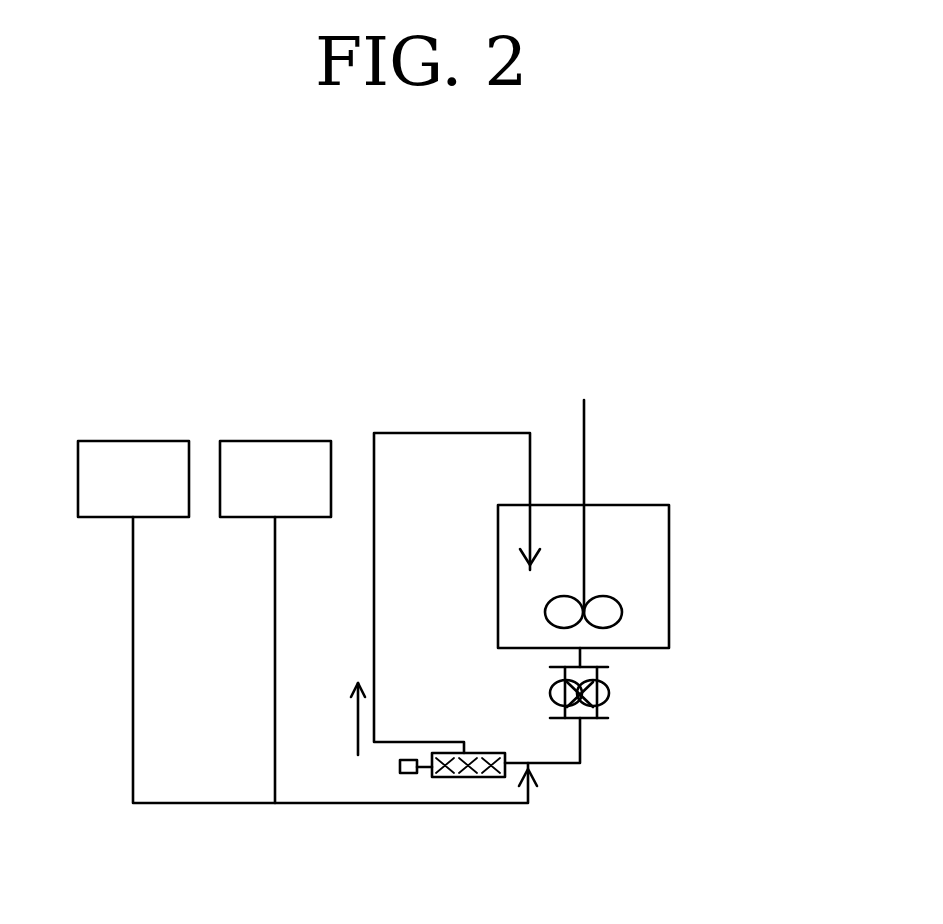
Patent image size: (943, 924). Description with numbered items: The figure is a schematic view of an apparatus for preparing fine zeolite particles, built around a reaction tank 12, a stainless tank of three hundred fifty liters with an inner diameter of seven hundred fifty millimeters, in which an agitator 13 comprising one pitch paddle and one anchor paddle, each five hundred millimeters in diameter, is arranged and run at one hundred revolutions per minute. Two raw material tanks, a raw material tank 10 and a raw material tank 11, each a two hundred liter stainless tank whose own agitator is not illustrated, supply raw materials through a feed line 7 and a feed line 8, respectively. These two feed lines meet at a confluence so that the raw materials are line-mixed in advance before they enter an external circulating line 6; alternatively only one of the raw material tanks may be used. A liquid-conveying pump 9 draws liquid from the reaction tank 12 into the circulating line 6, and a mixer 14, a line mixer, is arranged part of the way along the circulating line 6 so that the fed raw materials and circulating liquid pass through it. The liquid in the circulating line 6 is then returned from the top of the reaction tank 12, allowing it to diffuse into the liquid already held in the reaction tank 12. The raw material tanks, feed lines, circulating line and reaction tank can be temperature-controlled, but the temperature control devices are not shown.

The circulating line 6 is at (412, 433).
The feed line 7 is at (133, 642).
The feed line 8 is at (275, 578).
The liquid-conveying pump 9 is at (608, 700).
The raw material tank 10 is at (102, 457).
The raw material tank 11 is at (243, 457).
The reaction tank 12 is at (637, 595).
The agitator 13 is at (585, 462).
The mixer 14 is at (462, 777).